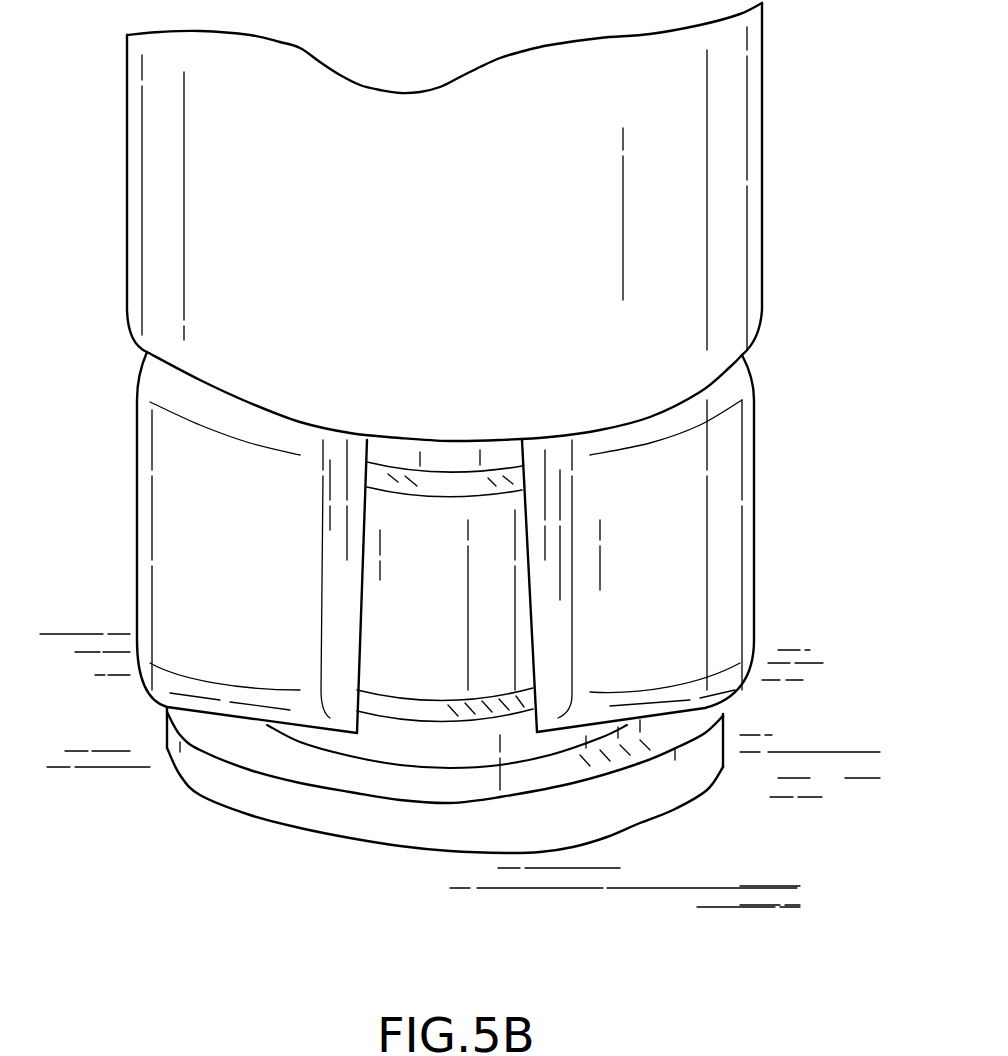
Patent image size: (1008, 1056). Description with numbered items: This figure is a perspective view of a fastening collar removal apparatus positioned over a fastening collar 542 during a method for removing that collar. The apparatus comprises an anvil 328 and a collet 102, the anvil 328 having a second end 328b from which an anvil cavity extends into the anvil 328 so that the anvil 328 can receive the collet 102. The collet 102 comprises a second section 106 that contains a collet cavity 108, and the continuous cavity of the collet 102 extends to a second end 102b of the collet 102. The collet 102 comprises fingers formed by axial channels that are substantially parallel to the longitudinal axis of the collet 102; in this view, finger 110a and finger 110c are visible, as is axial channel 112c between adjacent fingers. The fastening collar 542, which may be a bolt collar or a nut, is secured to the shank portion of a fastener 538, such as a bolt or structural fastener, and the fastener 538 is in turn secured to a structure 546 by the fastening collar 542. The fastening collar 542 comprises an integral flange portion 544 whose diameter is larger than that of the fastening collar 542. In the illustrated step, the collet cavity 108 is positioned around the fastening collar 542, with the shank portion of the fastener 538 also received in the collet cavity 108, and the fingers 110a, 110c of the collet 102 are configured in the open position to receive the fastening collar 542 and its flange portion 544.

The anvil 328 is at (718, 105).
The second end of the anvil 328b is at (742, 352).
The second section of the collet 106 is at (748, 480).
The collet 102 is at (590, 570).
The collet cavity 108 is at (470, 553).
The finger 110c is at (180, 578).
The finger 110a is at (672, 700).
The axial channel 112c is at (413, 573).
The second end of the collet 102b is at (727, 683).
The fastening collar 542 is at (433, 655).
The fastener 538 is at (388, 680).
The flange portion 544 is at (480, 750).
The structure 546 is at (813, 777).